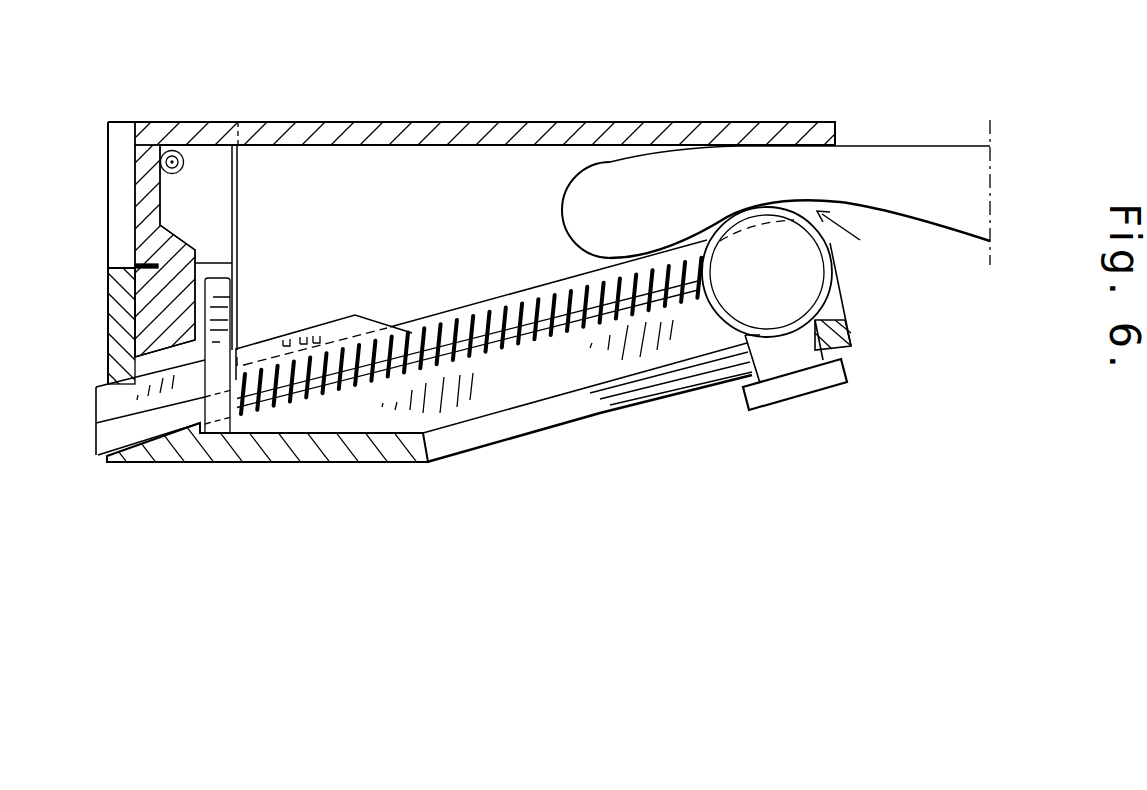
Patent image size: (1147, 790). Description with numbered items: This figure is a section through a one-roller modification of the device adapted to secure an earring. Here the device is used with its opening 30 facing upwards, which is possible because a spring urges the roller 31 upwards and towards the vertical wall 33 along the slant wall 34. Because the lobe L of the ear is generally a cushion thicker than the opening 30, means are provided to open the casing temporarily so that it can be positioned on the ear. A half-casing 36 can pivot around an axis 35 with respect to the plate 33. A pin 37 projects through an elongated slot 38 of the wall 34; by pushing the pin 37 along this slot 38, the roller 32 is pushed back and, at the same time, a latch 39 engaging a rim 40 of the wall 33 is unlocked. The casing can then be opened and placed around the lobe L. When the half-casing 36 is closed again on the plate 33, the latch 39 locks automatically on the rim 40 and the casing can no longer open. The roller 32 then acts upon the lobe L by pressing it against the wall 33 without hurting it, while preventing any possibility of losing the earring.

The opening 30 is at (854, 239).
The roller 31 is at (560, 345).
The roller 32 is at (818, 280).
The vertical wall 33 is at (602, 122).
The slant wall 34 is at (631, 407).
The axis 35 is at (171, 150).
The half-casing 36 is at (372, 410).
The pin 37 is at (797, 387).
The elongated slot 38 is at (681, 378).
The latch 39 is at (142, 323).
The rim 40 is at (140, 192).
The lobe L is at (563, 217).